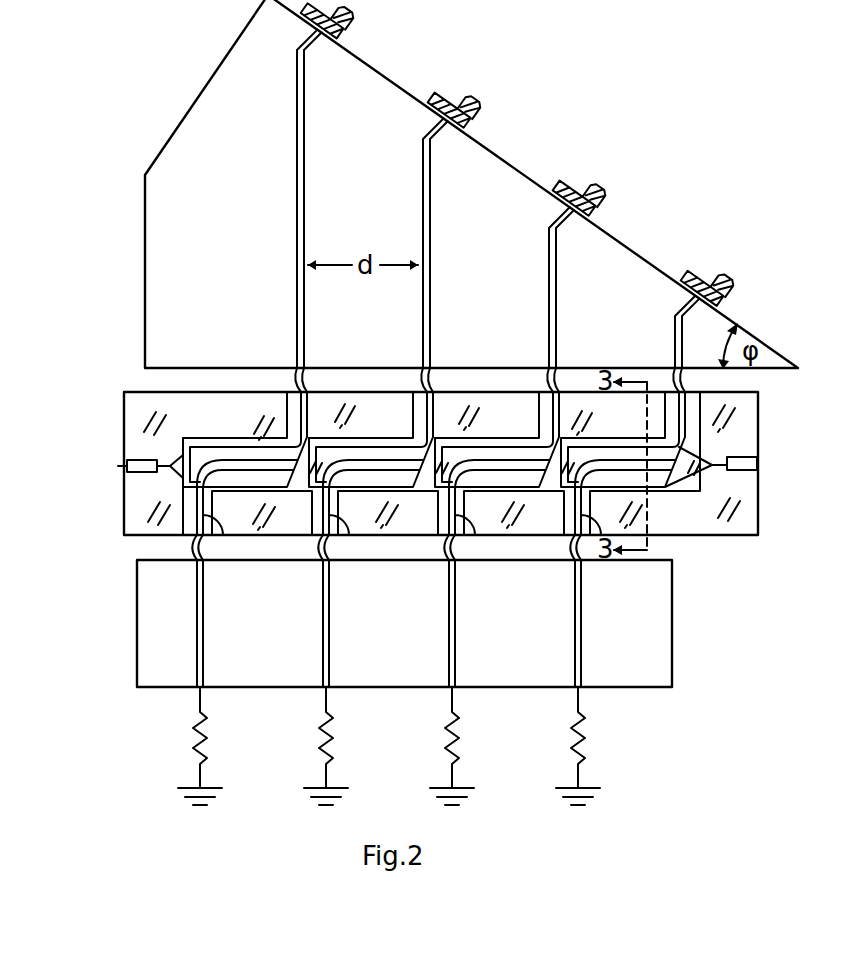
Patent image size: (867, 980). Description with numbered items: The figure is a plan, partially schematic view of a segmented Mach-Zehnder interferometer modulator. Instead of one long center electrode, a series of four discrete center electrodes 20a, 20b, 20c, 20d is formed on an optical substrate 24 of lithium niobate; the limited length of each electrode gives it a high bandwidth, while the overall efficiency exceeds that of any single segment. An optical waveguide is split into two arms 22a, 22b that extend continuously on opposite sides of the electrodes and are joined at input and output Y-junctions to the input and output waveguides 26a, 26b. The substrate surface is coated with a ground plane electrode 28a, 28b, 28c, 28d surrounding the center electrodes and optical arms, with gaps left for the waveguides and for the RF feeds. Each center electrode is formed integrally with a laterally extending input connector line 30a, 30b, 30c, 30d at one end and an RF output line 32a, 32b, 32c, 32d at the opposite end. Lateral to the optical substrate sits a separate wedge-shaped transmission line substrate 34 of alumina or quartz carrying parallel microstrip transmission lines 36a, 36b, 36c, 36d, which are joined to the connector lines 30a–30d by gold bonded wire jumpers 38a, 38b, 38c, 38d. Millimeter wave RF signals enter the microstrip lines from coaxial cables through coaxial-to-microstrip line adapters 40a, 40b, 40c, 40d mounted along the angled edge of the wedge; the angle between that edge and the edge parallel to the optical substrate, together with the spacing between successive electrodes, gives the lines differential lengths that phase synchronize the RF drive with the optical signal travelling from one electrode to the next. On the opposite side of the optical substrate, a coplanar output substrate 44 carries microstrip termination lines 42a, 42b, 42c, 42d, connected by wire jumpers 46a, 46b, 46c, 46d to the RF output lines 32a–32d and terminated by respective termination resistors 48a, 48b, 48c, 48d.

The center electrode 20a is at (580, 448).
The center electrode 20b is at (465, 448).
The center electrode 20c is at (340, 448).
The center electrode 20d is at (240, 448).
The optical arm 22a is at (703, 432).
The optical arm 22b is at (668, 484).
The substrate 24 is at (116, 497).
The input waveguide 26a is at (745, 470).
The output waveguide 26b is at (127, 465).
The ground plane electrode 28a is at (740, 537).
The ground plane electrode 28b is at (566, 537).
The ground plane electrode 28c is at (410, 537).
The ground plane electrode 28d is at (125, 400).
The input connector line 30a is at (685, 410).
The input connector line 30b is at (575, 392).
The input connector line 30c is at (450, 392).
The input connector line 30d is at (326, 392).
The RF output line 32a is at (585, 512).
The RF output line 32b is at (474, 540).
The RF output line 32c is at (348, 540).
The RF output line 32d is at (222, 540).
The transmission line substrate 34 is at (145, 222).
The microstrip transmission line 36a is at (675, 300).
The microstrip transmission line 36b is at (549, 257).
The microstrip transmission line 36c is at (423, 200).
The microstrip transmission line 36d is at (297, 200).
The wire jumper 38a is at (674, 380).
The wire jumper 38b is at (548, 380).
The wire jumper 38c is at (422, 380).
The wire jumper 38d is at (296, 380).
The coaxial-to-microstrip line adapter 40a is at (720, 300).
The coaxial-to-microstrip line adapter 40b is at (592, 208).
The coaxial-to-microstrip line adapter 40c is at (470, 125).
The coaxial-to-microstrip line adapter 40d is at (344, 37).
The microstrip termination line 42a is at (581, 652).
The microstrip termination line 42b is at (455, 652).
The microstrip termination line 42c is at (329, 652).
The microstrip termination line 42d is at (203, 652).
The output substrate 44 is at (137, 655).
The wire jumper 46a is at (580, 540).
The wire jumper 46b is at (452, 540).
The wire jumper 46c is at (310, 540).
The wire jumper 46d is at (190, 547).
The termination resistor 48a is at (573, 740).
The termination resistor 48b is at (447, 740).
The termination resistor 48c is at (320, 740).
The termination resistor 48d is at (195, 740).